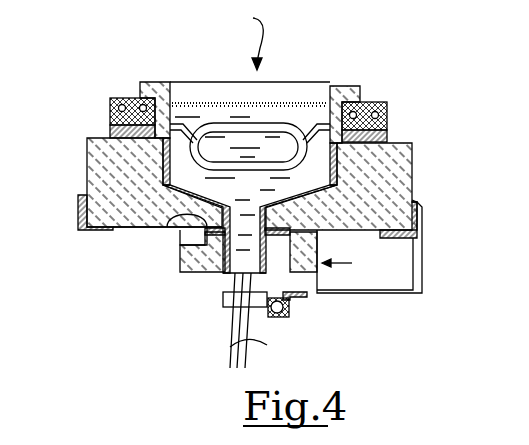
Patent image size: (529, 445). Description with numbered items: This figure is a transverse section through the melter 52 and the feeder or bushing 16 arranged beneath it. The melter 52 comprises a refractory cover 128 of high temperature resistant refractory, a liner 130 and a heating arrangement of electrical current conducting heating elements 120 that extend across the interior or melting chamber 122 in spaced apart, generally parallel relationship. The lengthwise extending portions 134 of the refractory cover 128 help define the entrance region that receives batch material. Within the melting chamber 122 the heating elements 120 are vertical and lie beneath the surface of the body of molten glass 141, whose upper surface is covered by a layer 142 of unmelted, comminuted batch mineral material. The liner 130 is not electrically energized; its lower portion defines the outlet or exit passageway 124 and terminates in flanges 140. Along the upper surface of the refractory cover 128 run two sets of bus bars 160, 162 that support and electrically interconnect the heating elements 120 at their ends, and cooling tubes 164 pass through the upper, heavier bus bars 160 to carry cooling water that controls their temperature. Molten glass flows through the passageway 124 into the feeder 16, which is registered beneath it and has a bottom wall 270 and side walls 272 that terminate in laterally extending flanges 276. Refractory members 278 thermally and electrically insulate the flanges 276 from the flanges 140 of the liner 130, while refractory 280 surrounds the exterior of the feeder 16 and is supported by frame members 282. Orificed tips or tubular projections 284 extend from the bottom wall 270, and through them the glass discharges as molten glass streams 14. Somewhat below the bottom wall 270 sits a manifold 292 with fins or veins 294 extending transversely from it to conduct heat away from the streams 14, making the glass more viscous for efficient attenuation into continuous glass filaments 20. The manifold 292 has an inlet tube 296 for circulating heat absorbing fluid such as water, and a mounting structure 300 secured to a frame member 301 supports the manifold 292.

The molten glass streams 14 is at (218, 300).
The feeder or bushing 16 is at (353, 266).
The continuous glass filaments 20 is at (267, 345).
The melter 52 is at (242, 36).
The electrical current conducting heating elements 120 is at (230, 126).
The melting chamber 122 is at (178, 93).
The outlet or exit passageway 124 is at (277, 128).
The refractory cover 128 is at (87, 183).
The liner 130 is at (160, 172).
The lengthwise extending portions 134 is at (147, 82).
The flanges 140 is at (188, 222).
The body of molten glass 141 is at (258, 203).
The layer of unmelted batch mineral material 142 is at (243, 100).
The bus bars 160 is at (110, 113).
The bus bars 162 is at (110, 132).
The cooling tubes 164 is at (141, 105).
The bottom wall 270 is at (225, 275).
The side walls 272 is at (215, 270).
The laterally extending flanges 276 is at (190, 248).
The refractory members 278 is at (183, 235).
The refractory 280 is at (200, 262).
The frame members 282 is at (190, 255).
The orificed tips or tubular projections 284 is at (262, 278).
The manifold 292 is at (278, 318).
The fins or veins 294 is at (216, 333).
The inlet tube 296 is at (290, 312).
The mounting structure 300 is at (385, 294).
The frame member 301 is at (416, 202).